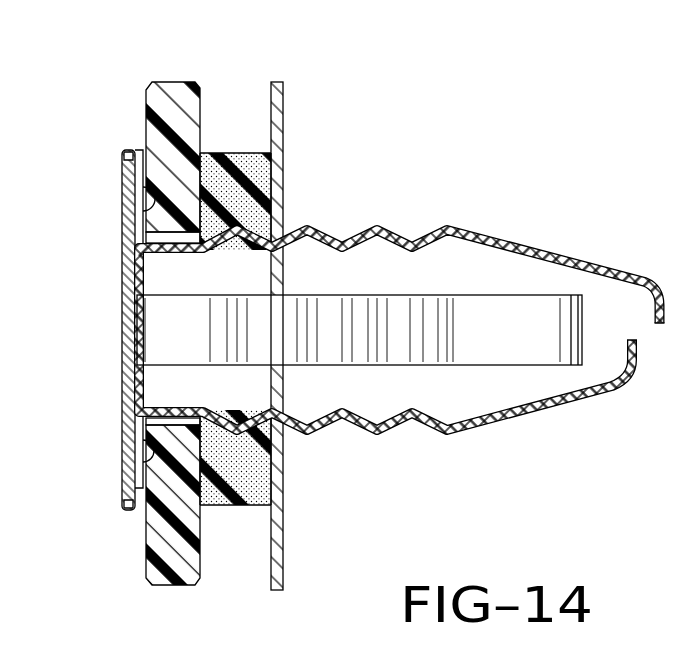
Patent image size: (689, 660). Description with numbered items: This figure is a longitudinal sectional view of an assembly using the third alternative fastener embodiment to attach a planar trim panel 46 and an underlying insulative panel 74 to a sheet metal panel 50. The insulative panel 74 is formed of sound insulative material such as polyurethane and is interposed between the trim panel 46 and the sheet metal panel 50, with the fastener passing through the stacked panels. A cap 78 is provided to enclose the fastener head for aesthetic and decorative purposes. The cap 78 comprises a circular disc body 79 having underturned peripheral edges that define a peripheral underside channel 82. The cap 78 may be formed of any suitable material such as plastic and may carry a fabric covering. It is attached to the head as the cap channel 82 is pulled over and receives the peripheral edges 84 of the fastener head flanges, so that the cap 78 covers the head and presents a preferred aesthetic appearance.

The planar trim panel 46 is at (170, 93).
The insulative panel 74 is at (238, 172).
The sheet metal panel 50 is at (278, 112).
The cap 78 is at (102, 239).
The circular disc body 79 is at (125, 323).
The peripheral underside channel 82 is at (125, 160).
The peripheral edges of the fastener head flanges 84 is at (135, 508).